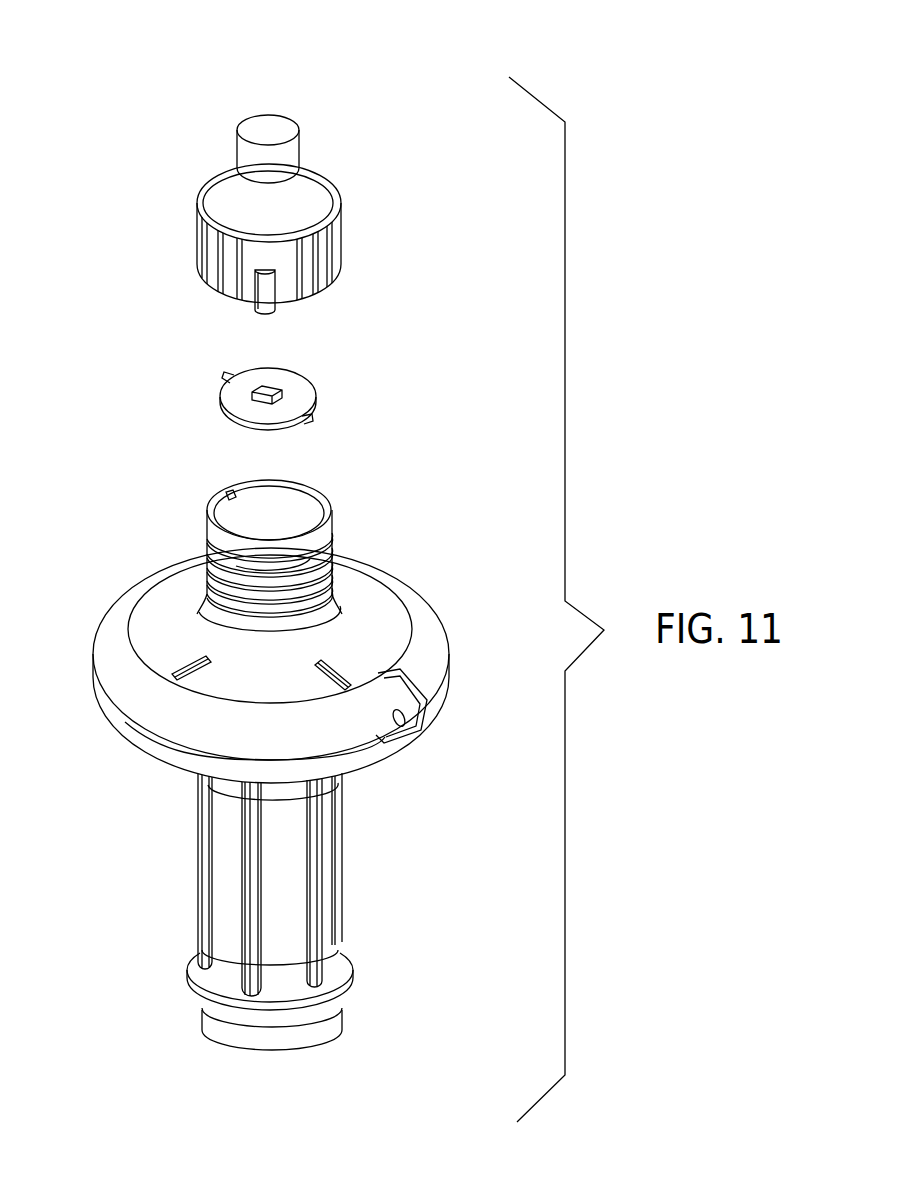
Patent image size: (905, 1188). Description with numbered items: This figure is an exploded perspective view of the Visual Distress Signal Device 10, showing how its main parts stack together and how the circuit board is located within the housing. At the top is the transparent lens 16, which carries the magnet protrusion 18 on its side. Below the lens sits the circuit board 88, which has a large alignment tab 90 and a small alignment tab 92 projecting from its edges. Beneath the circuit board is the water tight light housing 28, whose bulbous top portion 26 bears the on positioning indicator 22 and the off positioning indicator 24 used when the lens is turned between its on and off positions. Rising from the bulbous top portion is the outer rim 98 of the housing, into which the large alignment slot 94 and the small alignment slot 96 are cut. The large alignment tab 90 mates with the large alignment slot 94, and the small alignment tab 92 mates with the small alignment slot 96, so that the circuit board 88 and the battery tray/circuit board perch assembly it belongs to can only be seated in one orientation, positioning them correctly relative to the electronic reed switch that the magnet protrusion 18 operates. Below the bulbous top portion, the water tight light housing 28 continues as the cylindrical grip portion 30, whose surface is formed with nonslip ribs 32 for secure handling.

The Visual Distress Signal Device 10 is at (303, 99).
The transparent lens 16 is at (231, 200).
The magnet protrusion 18 is at (262, 297).
The on positioning indicator 22 is at (178, 667).
The off positioning indicator 24 is at (423, 683).
The bulbous top portion 26 is at (121, 600).
The water tight light housing 28 is at (192, 758).
The cylindrical grip portion 30 is at (227, 897).
The nonslip ribs 32 is at (318, 895).
The circuit board 88 is at (316, 398).
The large alignment tab 90 is at (232, 375).
The small alignment tab 92 is at (312, 418).
The large alignment slot 94 is at (229, 493).
The small alignment slot 96 is at (307, 541).
The outer rim 98 is at (318, 492).